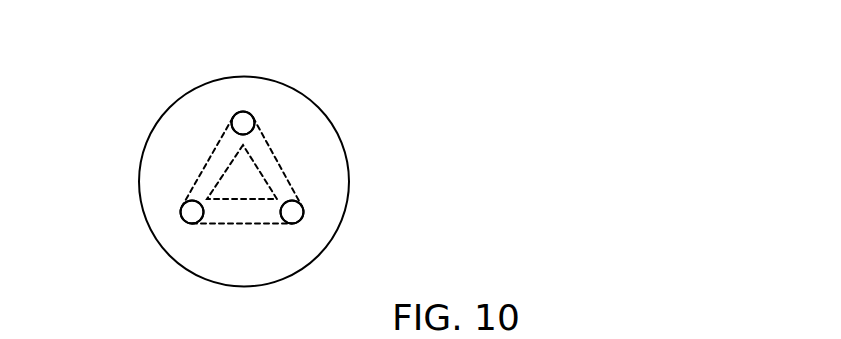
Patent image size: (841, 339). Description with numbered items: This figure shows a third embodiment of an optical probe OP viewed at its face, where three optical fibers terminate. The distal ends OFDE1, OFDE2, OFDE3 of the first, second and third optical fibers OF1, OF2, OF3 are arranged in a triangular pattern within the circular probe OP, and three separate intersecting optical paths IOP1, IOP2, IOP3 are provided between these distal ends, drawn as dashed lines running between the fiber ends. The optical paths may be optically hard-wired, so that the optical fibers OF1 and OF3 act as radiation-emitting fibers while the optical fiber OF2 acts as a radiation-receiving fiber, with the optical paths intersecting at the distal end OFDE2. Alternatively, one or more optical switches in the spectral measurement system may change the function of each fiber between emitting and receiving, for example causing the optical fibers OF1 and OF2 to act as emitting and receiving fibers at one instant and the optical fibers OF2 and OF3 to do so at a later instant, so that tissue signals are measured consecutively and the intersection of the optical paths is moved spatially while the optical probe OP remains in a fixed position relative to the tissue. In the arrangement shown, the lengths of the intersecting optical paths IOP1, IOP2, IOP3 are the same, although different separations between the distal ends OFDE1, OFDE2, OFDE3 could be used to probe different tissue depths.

The optical probe OP is at (248, 76).
The first optical fiber OF1 is at (253, 121).
The distal end of the first optical fiber OFDE1 is at (246, 126).
The first intersecting optical path IOP1 is at (283, 167).
The second optical fiber OF2 is at (301, 208).
The distal end of the second optical fiber OFDE2 is at (297, 215).
The second intersecting optical path IOP2 is at (245, 222).
The third optical fiber OF3 is at (182, 207).
The distal end of the third optical fiber OFDE3 is at (187, 213).
The third intersecting optical path IOP3 is at (203, 168).